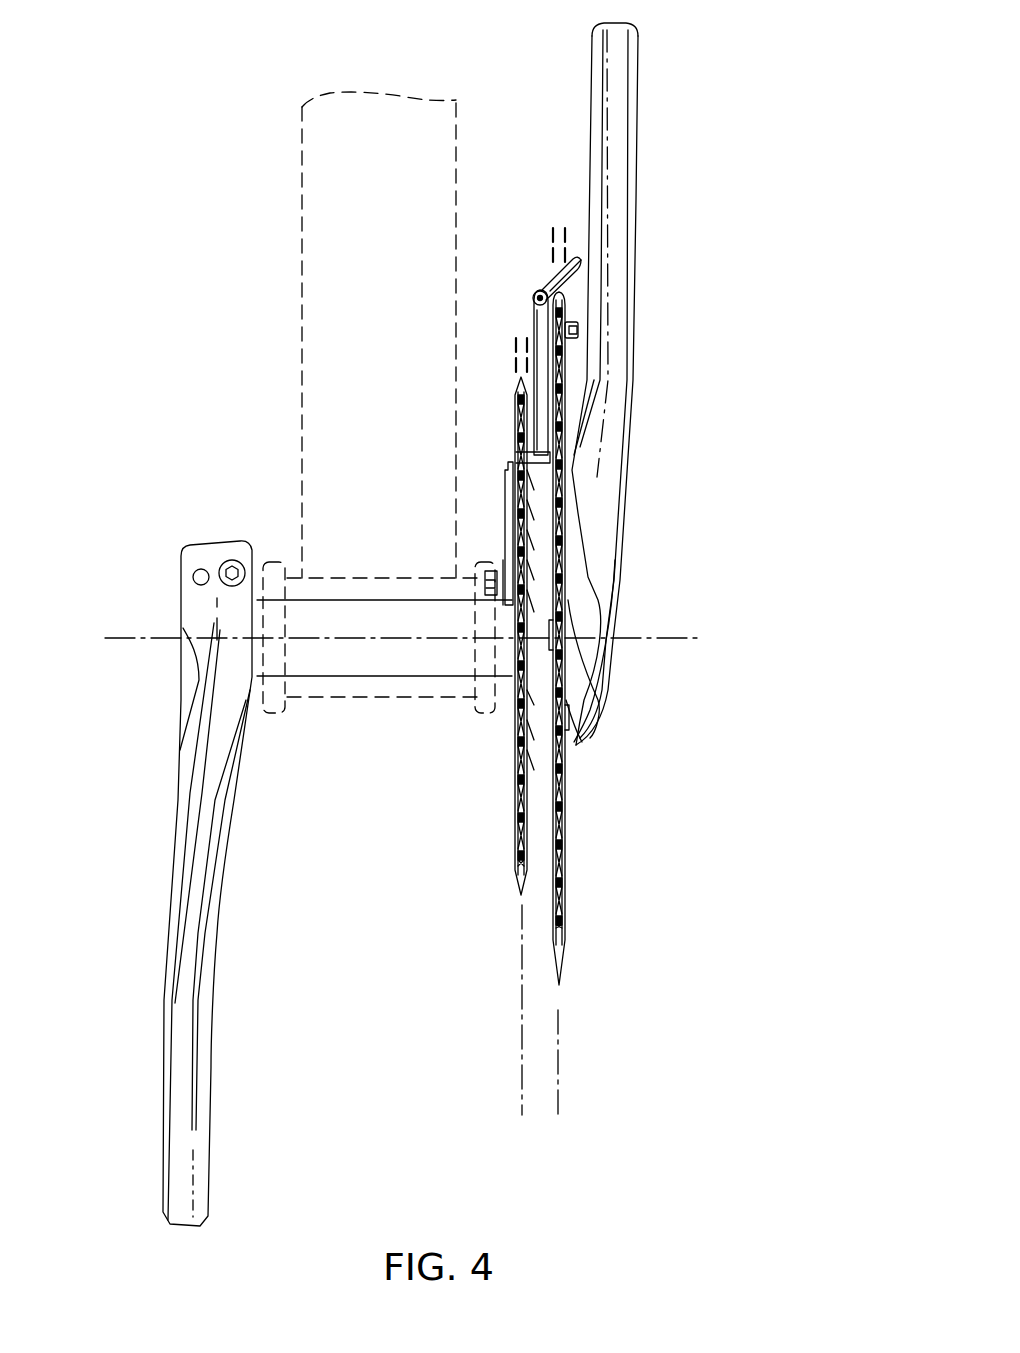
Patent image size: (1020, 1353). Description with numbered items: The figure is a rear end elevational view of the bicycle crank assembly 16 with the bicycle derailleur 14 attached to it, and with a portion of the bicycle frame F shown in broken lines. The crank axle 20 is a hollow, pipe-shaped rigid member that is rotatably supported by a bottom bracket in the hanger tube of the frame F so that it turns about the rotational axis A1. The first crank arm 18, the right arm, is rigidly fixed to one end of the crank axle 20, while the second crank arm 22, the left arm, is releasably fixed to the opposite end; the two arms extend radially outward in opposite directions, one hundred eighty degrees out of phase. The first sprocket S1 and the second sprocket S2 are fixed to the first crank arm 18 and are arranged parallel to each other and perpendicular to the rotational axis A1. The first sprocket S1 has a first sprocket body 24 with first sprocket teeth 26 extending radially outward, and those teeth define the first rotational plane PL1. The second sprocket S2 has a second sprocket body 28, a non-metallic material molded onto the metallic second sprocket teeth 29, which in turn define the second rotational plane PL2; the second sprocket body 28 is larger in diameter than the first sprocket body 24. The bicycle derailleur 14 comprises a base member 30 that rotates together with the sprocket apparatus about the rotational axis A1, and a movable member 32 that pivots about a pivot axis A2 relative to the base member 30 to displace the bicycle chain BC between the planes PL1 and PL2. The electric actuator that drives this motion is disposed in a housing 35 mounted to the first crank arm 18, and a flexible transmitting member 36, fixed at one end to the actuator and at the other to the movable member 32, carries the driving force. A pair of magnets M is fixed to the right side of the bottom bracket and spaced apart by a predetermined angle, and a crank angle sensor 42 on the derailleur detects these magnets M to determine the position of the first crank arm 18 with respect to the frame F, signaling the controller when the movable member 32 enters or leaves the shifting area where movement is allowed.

The bicycle derailleur 14 is at (523, 268).
The bicycle crank assembly 16 is at (690, 78).
The first crank arm 18 is at (648, 170).
The crank axle 20 is at (365, 684).
The second crank arm 22 is at (172, 830).
The first sprocket body 24 is at (516, 764).
The first sprocket teeth 26 is at (517, 823).
The second sprocket body 28 is at (568, 772).
The second sprocket teeth 29 is at (563, 850).
The base member 30 is at (552, 331).
The movable member 32 is at (571, 276).
The housing 35 is at (505, 512).
The transmitting member 36 is at (533, 318).
The crank angle sensor 42 is at (501, 574).
The bicycle frame F is at (300, 252).
The rotational axis A1 is at (680, 636).
The pivot axis A2 is at (535, 296).
The bicycle chain BC is at (556, 232).
The magnets M is at (482, 605).
The first sprocket S1 is at (516, 885).
The second sprocket S2 is at (561, 972).
The first rotational plane PL1 is at (522, 1095).
The second rotational plane PL2 is at (558, 1095).